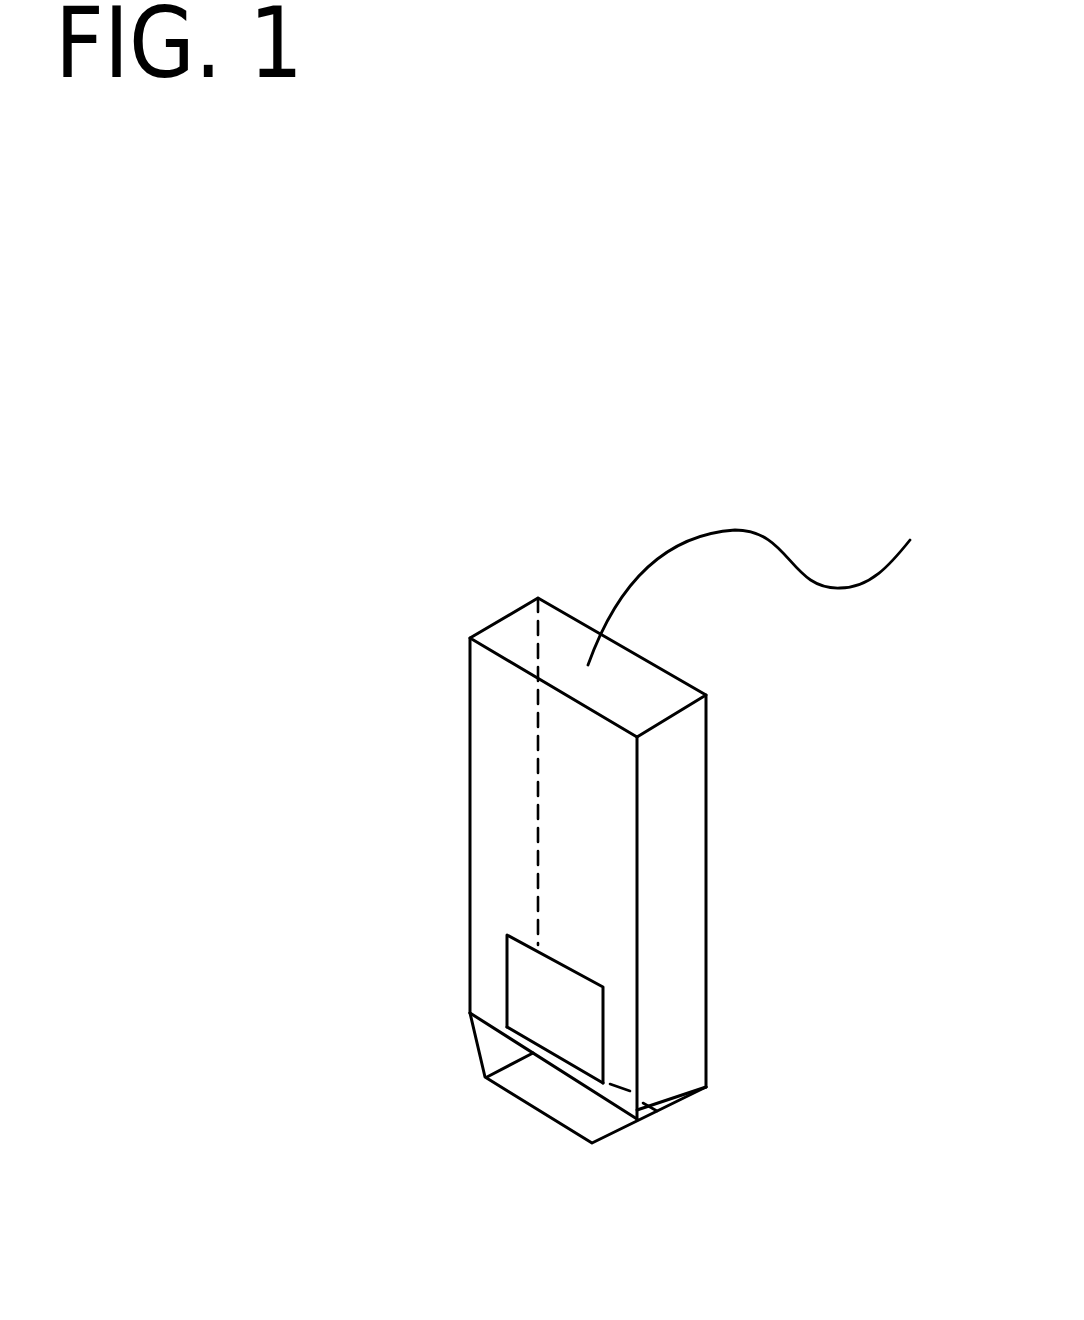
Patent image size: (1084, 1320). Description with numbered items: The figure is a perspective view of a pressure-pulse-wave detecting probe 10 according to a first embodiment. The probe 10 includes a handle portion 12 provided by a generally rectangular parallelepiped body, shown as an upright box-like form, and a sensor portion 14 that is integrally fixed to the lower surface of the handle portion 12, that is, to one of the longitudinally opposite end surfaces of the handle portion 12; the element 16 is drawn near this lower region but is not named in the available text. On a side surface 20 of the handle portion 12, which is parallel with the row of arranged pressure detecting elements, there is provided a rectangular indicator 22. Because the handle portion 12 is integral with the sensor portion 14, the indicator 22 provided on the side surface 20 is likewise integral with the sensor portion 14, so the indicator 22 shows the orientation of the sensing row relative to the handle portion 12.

The pressure-pulse-wave detecting probe 10 is at (714, 330).
The handle portion 12 is at (738, 840).
The sensor portion 14 is at (674, 1170).
The bottom panel 16 is at (540, 1085).
The side surface 20 is at (508, 797).
The indicator 22 is at (550, 1016).